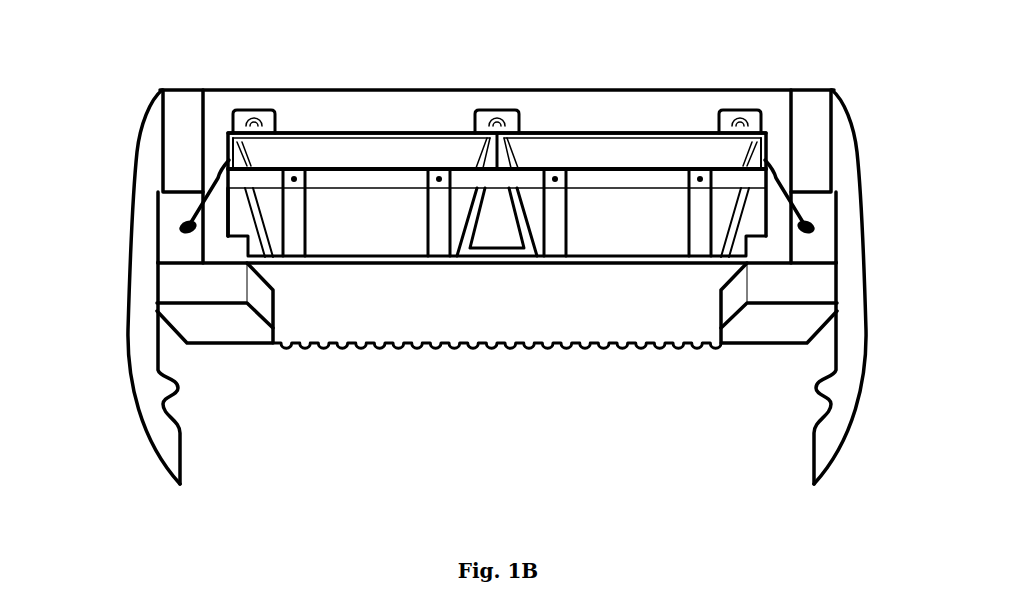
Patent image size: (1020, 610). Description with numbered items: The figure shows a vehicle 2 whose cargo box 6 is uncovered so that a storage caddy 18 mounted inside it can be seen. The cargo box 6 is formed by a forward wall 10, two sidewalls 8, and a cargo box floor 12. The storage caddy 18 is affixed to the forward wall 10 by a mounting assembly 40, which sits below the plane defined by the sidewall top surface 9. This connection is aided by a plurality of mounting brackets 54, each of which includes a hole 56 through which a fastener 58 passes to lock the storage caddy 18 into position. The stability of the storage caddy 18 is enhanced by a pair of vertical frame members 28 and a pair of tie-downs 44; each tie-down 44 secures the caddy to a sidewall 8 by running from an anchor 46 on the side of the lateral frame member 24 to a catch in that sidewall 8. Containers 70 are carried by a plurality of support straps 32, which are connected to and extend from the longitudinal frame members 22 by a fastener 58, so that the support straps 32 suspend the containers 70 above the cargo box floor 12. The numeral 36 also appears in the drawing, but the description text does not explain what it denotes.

The vehicle 2 is at (497, 85).
The cargo box 6 is at (866, 468).
The sidewall 8 is at (182, 245).
The sidewall top surface 9 is at (182, 102).
The forward wall 10 is at (300, 112).
The cargo box floor 12 is at (497, 300).
The storage caddy 18 is at (611, 115).
The longitudinal frame member 22 is at (268, 178).
The lateral frame member 24 is at (767, 140).
The vertical frame member 28 is at (230, 237).
The support strap 32 is at (437, 222).
The right pivot 36 is at (812, 232).
The mounting assembly 40 is at (242, 105).
The tie-down 44 is at (205, 215).
The anchor 46 is at (770, 157).
The mounting bracket 54 is at (497, 126).
The hole 56 is at (497, 126).
The fastener 58 is at (697, 170).
The container 70 is at (643, 152).